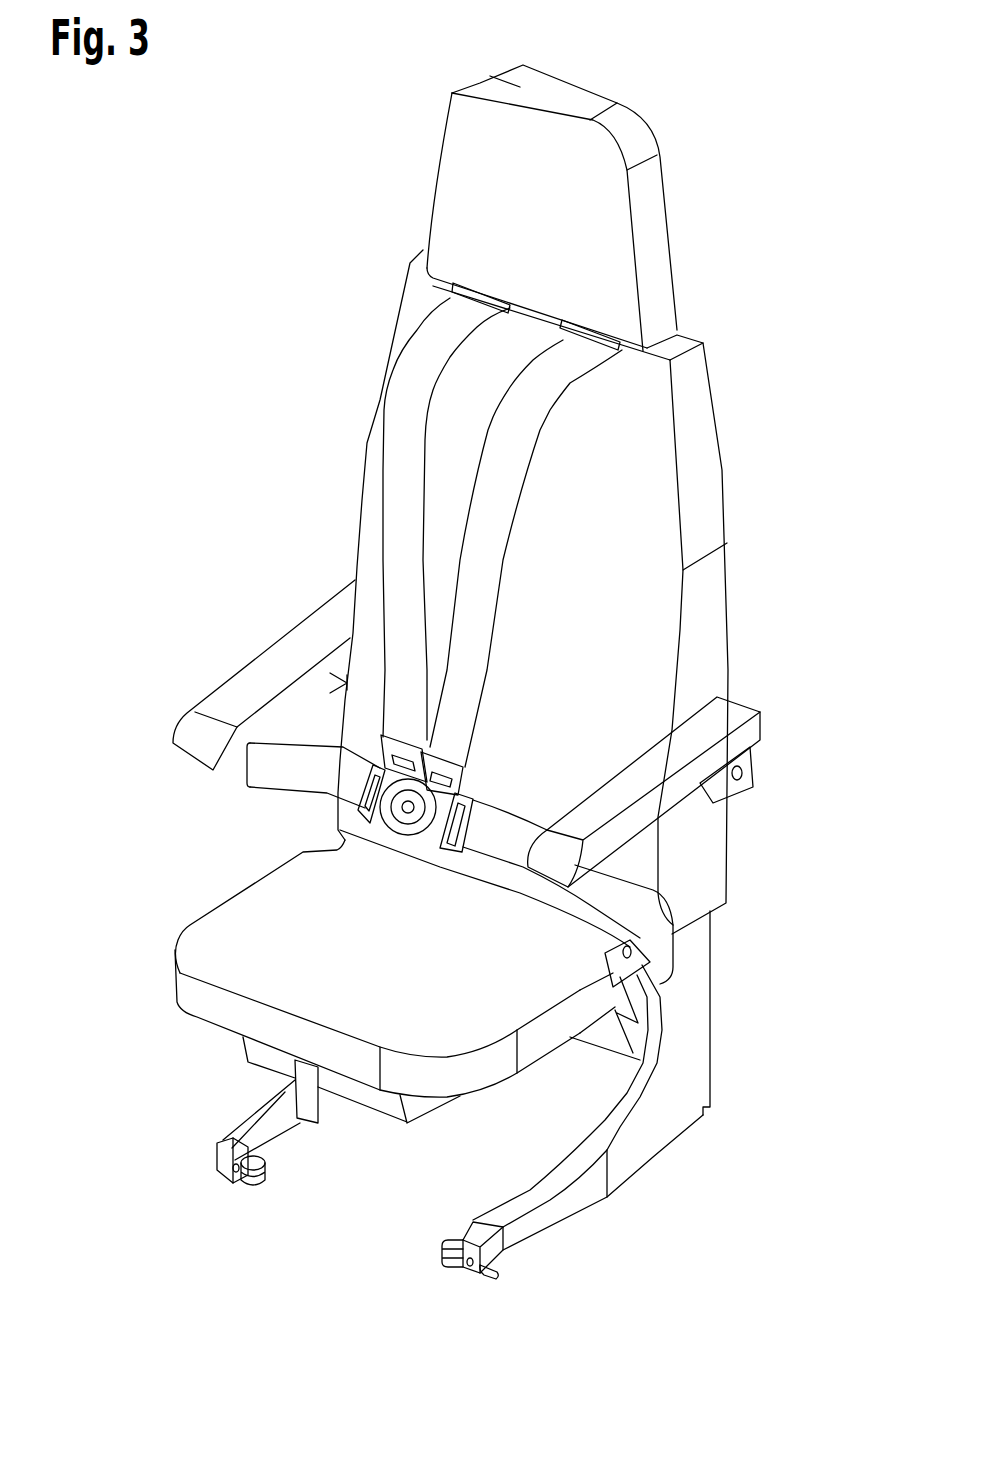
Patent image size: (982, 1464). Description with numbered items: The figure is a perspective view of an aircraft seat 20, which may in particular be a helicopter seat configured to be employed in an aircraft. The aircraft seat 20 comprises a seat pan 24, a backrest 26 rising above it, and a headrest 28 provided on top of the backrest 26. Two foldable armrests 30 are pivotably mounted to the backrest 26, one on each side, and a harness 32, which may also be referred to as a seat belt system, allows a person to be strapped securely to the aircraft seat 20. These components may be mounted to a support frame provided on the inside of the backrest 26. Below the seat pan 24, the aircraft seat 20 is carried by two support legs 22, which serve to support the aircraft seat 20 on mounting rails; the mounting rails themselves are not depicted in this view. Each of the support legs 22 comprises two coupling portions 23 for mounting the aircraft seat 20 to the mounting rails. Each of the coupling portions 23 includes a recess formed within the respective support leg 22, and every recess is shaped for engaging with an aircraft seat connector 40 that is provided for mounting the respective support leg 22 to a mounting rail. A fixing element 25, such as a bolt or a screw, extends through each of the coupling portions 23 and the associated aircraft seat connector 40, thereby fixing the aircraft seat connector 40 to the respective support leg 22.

The aircraft seat 20 is at (795, 96).
The support leg 22 is at (742, 1025).
The coupling portion 23 is at (200, 1143).
The seat pan 24 is at (181, 891).
The fixing element 25 is at (230, 1177).
The backrest 26 is at (749, 470).
The headrest 28 is at (695, 200).
The foldable armrest 30 is at (245, 688).
The harness 32 is at (405, 386).
The aircraft seat connector 40 is at (228, 1198).